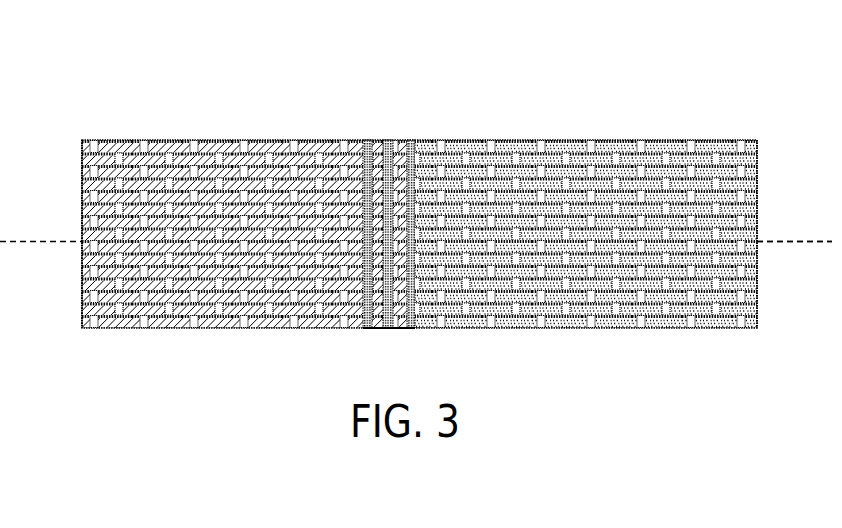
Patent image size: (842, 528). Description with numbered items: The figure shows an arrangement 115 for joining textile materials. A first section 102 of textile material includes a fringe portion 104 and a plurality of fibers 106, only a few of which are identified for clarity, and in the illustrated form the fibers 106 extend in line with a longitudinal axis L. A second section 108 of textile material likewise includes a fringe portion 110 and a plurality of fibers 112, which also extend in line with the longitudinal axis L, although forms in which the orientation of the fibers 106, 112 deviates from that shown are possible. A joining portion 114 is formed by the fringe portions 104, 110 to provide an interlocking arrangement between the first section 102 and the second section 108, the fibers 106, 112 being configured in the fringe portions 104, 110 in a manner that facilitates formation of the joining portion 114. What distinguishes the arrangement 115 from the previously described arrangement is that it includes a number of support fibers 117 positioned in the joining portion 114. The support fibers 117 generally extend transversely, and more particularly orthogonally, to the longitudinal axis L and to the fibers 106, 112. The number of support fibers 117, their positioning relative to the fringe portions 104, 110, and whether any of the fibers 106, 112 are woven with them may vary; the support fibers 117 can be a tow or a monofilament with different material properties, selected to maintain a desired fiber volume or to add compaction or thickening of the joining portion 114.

The first section 102 is at (241, 136).
The fringe portion 104 is at (363, 137).
The fibers 106 is at (82, 159).
The second section 108 is at (599, 136).
The fringe portion 110 is at (416, 136).
The fibers 112 is at (757, 158).
The joining portion 114 is at (390, 136).
The arrangement 115 is at (656, 84).
The support fibers 117 is at (411, 329).
The longitudinal axis L is at (794, 245).